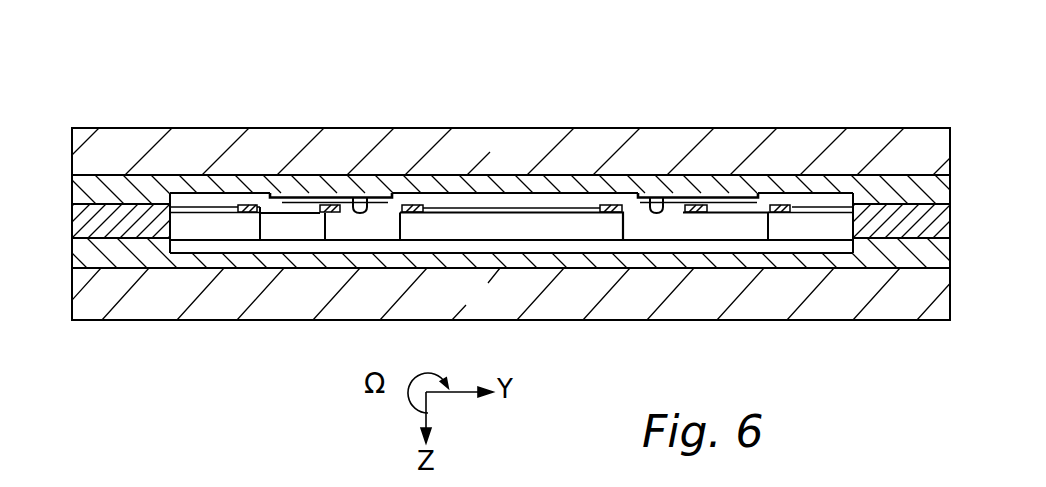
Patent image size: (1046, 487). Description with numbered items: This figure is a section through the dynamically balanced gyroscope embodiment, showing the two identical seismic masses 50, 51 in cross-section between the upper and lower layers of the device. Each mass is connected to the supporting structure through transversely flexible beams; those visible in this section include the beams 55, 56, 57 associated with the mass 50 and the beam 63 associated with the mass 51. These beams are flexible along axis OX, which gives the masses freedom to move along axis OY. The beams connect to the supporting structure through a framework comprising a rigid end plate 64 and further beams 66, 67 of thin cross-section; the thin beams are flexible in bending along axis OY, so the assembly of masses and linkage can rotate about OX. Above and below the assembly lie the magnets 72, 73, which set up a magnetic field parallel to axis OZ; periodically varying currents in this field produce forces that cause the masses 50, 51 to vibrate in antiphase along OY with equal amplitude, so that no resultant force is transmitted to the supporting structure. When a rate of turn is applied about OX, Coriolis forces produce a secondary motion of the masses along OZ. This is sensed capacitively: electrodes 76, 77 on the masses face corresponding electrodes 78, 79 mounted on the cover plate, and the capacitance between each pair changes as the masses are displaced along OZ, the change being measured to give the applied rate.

The mass 50 is at (272, 220).
The mass 51 is at (712, 228).
The beam 55 is at (245, 213).
The beam 56 is at (333, 214).
The beam 57 is at (412, 213).
The beam 63 is at (777, 216).
The end plate 64 is at (558, 208).
The further beam 66 is at (200, 205).
The further beam 67 is at (815, 205).
The magnet 72 is at (550, 127).
The magnet 73 is at (287, 300).
The electrode 76 is at (287, 202).
The electrode 77 is at (718, 203).
The electrode 78 is at (360, 197).
The electrode 79 is at (657, 197).